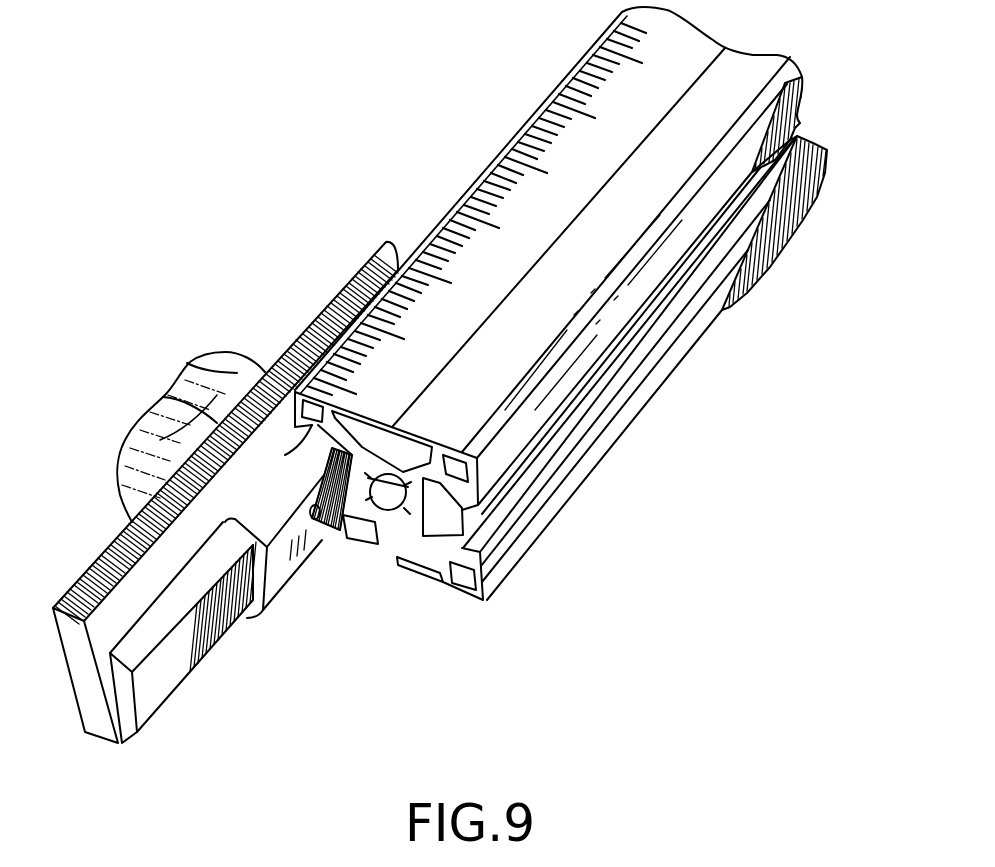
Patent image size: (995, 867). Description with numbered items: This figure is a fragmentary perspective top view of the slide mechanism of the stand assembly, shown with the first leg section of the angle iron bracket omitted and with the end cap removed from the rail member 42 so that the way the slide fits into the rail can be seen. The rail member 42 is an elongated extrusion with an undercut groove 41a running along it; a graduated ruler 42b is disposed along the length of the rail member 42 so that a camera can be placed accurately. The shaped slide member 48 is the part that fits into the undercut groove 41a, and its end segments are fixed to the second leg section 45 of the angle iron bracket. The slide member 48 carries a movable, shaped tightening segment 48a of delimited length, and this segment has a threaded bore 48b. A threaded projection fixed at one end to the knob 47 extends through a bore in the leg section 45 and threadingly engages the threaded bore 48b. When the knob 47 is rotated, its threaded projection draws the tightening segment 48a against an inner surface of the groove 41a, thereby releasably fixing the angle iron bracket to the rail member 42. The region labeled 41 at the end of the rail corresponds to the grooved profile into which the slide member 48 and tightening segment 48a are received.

The undercut groove region of rail member 41 is at (445, 543).
The undercut groove 41a is at (163, 397).
The rail member 42 is at (653, 367).
The graduated ruler 42b is at (512, 205).
The second leg section 45 is at (92, 700).
The knob 47 is at (203, 365).
The slide member 48 is at (157, 683).
The tightening segment 48a is at (280, 573).
The threaded bore 48b is at (314, 520).